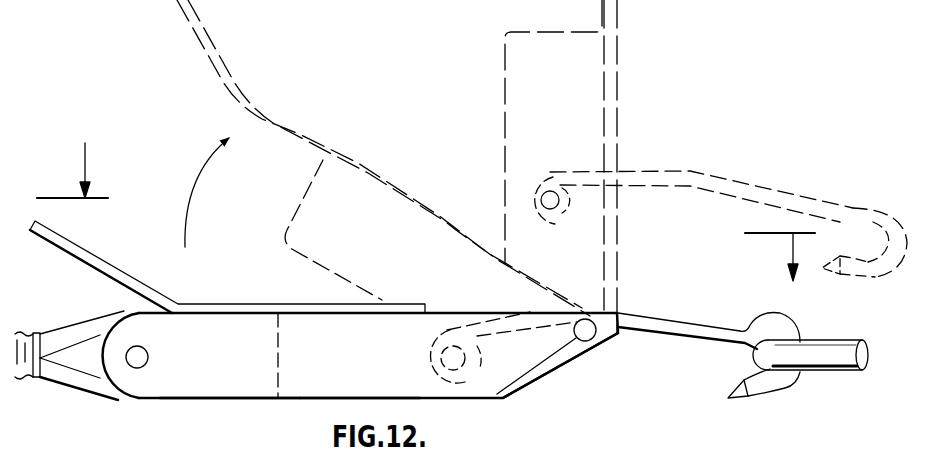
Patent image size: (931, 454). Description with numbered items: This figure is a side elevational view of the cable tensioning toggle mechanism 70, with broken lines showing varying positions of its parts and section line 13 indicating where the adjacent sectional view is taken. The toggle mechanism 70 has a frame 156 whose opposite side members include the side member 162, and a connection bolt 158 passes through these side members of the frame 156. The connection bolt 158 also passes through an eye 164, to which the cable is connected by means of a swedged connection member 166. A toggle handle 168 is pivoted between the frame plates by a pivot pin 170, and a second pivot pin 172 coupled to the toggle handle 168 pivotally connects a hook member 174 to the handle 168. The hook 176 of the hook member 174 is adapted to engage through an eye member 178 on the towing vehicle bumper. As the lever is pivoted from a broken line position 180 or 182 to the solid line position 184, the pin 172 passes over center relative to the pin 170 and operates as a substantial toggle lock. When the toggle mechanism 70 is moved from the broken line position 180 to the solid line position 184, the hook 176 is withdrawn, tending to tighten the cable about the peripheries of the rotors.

The section line 13- 13 is at (426, 212).
The toggle mechanism 70 is at (286, 403).
The frame 156 is at (195, 388).
The connection bolt 158 is at (137, 365).
The side member 162 is at (348, 372).
The eye 164 is at (113, 360).
The swedged connection member 166 is at (40, 333).
The toggle handle 168 is at (152, 283).
The pivot pin 170 is at (494, 397).
The pivot pin 172 is at (443, 378).
The hook member 174 is at (657, 317).
The hook 176 is at (850, 213).
The eye member 178 is at (827, 357).
The broken line position 180 is at (618, 123).
The broken line position 182 is at (302, 128).
The solid line position 184 is at (300, 294).